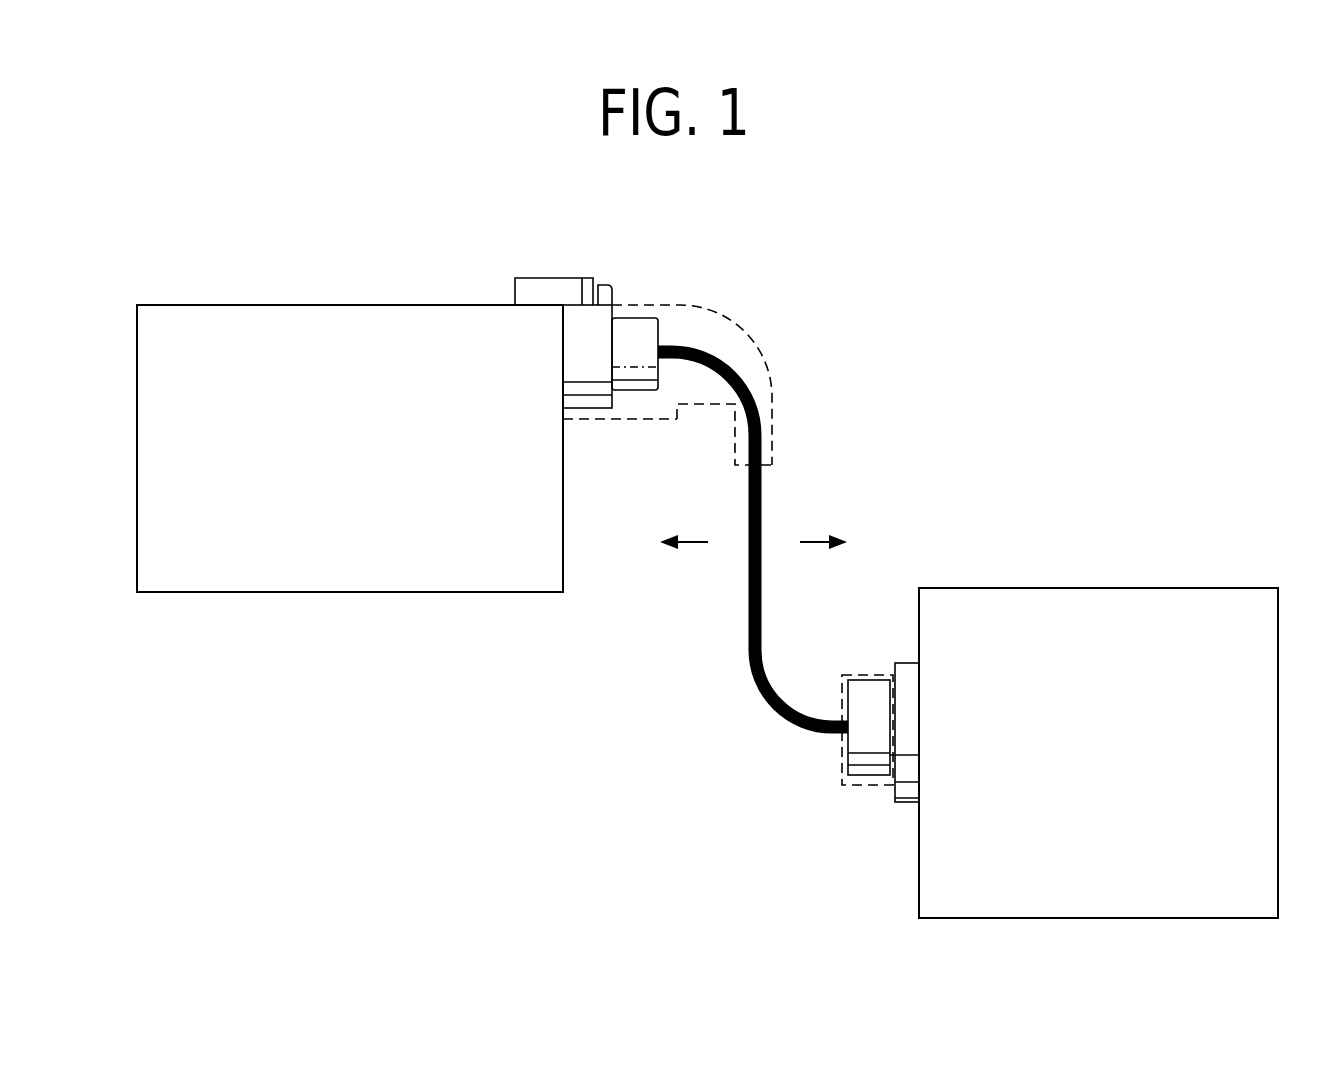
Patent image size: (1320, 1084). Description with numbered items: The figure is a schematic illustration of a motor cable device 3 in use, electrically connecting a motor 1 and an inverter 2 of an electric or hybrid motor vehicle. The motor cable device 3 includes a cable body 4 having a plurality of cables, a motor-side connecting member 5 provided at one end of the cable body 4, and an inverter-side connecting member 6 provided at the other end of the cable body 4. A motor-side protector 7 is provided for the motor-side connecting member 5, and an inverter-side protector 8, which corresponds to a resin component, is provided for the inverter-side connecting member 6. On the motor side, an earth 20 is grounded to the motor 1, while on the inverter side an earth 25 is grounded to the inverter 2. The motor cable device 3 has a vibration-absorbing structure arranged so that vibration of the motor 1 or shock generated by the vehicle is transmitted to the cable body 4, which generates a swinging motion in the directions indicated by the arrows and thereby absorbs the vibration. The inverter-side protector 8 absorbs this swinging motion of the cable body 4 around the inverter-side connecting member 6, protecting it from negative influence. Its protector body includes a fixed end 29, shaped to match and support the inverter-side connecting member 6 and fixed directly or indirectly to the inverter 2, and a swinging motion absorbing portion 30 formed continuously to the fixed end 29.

The motor 1 is at (1192, 581).
The inverter 2 is at (337, 301).
The motor cable device 3 is at (830, 421).
The cable body 4 is at (748, 636).
The motor-side connecting member 5 is at (870, 760).
The inverter-side connecting member 6 is at (635, 340).
The motor-side protector 7 is at (842, 775).
The inverter-side protector 8 is at (708, 332).
The earth 20 is at (905, 668).
The earth 25 is at (542, 279).
The fixed end 29 is at (614, 421).
The swinging motion absorbing portion 30 is at (735, 440).